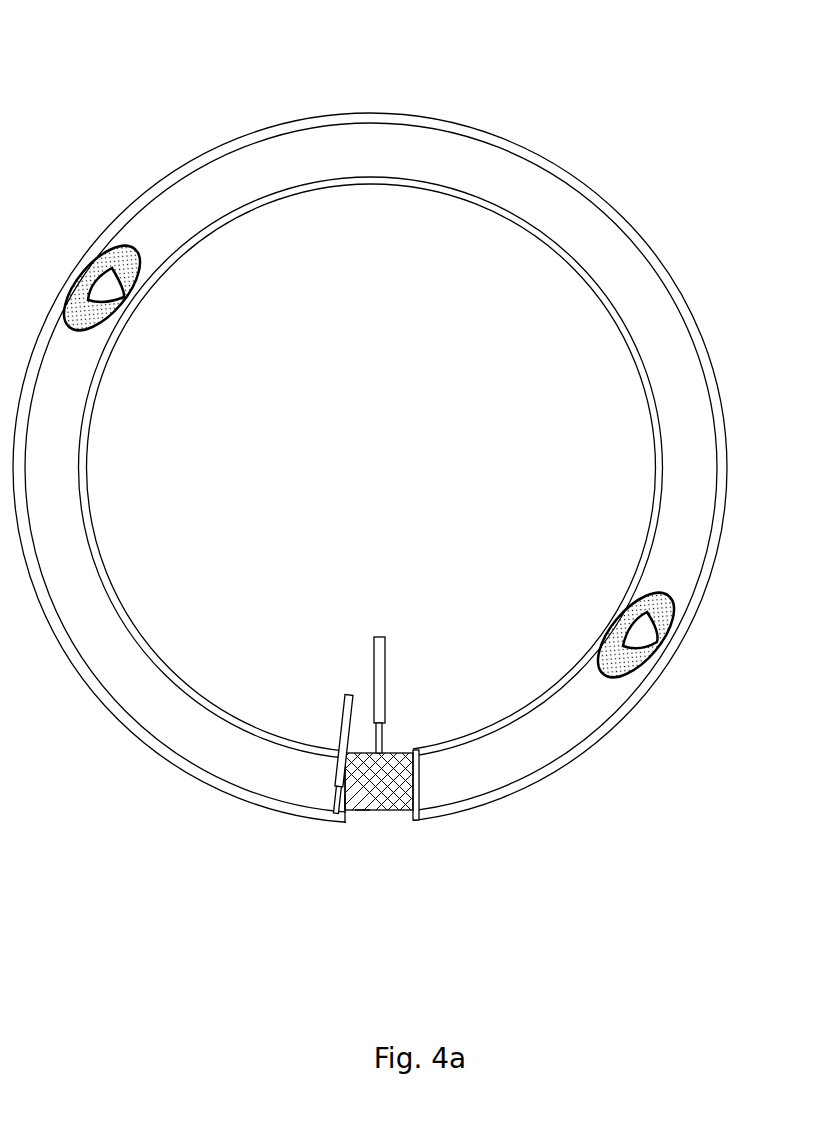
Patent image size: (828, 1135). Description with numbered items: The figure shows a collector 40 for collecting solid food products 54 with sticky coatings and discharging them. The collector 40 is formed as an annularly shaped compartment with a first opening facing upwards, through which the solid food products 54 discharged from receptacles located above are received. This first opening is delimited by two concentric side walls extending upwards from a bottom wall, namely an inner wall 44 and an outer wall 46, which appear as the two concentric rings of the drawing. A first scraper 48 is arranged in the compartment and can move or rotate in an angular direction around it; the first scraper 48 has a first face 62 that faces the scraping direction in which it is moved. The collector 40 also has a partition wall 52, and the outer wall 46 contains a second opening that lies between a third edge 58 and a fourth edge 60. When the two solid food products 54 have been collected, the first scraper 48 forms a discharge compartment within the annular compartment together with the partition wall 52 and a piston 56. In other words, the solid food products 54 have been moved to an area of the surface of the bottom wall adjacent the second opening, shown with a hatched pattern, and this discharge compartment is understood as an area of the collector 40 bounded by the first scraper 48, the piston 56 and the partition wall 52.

The collector 40 is at (147, 124).
The inner wall 44 is at (225, 725).
The outer wall 46 is at (550, 778).
The first scraper 48 is at (320, 800).
The partition wall 52 is at (393, 807).
The solid food product 54 is at (110, 298).
The piston 56 is at (392, 755).
The third edge 58 is at (347, 810).
The fourth edge 60 is at (407, 815).
The first face 62 is at (360, 807).